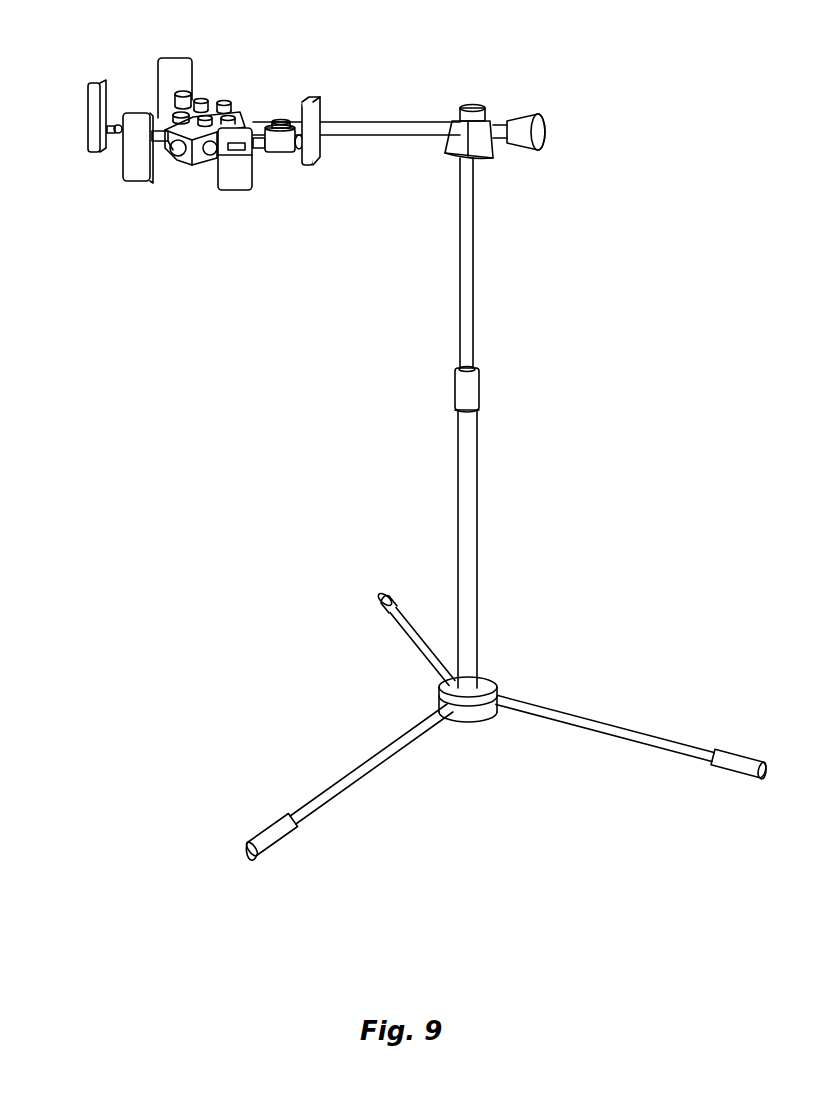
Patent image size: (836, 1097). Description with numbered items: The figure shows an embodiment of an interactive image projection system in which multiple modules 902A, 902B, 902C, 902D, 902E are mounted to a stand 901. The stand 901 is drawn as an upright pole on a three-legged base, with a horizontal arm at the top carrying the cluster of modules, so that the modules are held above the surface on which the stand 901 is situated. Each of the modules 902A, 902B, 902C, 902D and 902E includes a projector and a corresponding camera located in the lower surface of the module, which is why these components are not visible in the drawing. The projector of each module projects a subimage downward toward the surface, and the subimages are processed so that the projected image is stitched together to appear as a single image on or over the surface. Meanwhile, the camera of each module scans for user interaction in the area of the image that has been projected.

The stand 901 is at (385, 122).
The module 902A is at (175, 58).
The module 902B is at (310, 97).
The module 902C is at (240, 190).
The module 902D is at (137, 182).
The module 902E is at (100, 82).